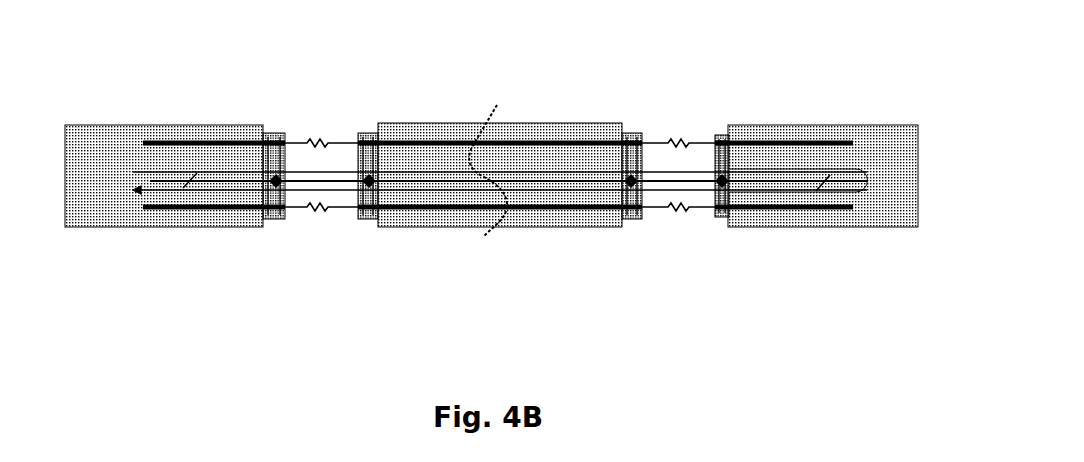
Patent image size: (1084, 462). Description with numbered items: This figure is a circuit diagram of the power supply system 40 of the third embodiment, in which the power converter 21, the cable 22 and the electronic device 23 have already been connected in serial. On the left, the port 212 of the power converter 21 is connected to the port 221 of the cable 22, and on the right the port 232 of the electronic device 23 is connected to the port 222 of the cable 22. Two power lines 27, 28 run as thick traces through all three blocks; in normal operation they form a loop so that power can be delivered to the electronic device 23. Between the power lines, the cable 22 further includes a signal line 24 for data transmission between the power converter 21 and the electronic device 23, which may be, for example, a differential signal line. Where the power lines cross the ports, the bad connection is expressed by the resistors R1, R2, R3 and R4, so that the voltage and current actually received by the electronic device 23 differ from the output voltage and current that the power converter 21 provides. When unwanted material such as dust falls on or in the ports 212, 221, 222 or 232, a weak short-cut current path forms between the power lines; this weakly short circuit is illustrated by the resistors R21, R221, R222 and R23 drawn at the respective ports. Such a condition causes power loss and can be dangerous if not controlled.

The power supply system 40 is at (658, 74).
The power converter 21 is at (130, 125).
The cable 22 is at (410, 124).
The electronic device 23 is at (758, 125).
The signal line 24 is at (847, 180).
The power line 27 is at (513, 140).
The power line 28 is at (543, 210).
The port 212 is at (278, 221).
The port 221 is at (370, 221).
The port 222 is at (631, 221).
The port 232 is at (720, 221).
The resistor R1 is at (321, 133).
The resistor R2 is at (321, 217).
The resistor R3 is at (678, 133).
The resistor R4 is at (678, 217).
The resistor R21 is at (276, 176).
The resistor R221 is at (369, 179).
The resistor R222 is at (631, 180).
The resistor R23 is at (724, 176).